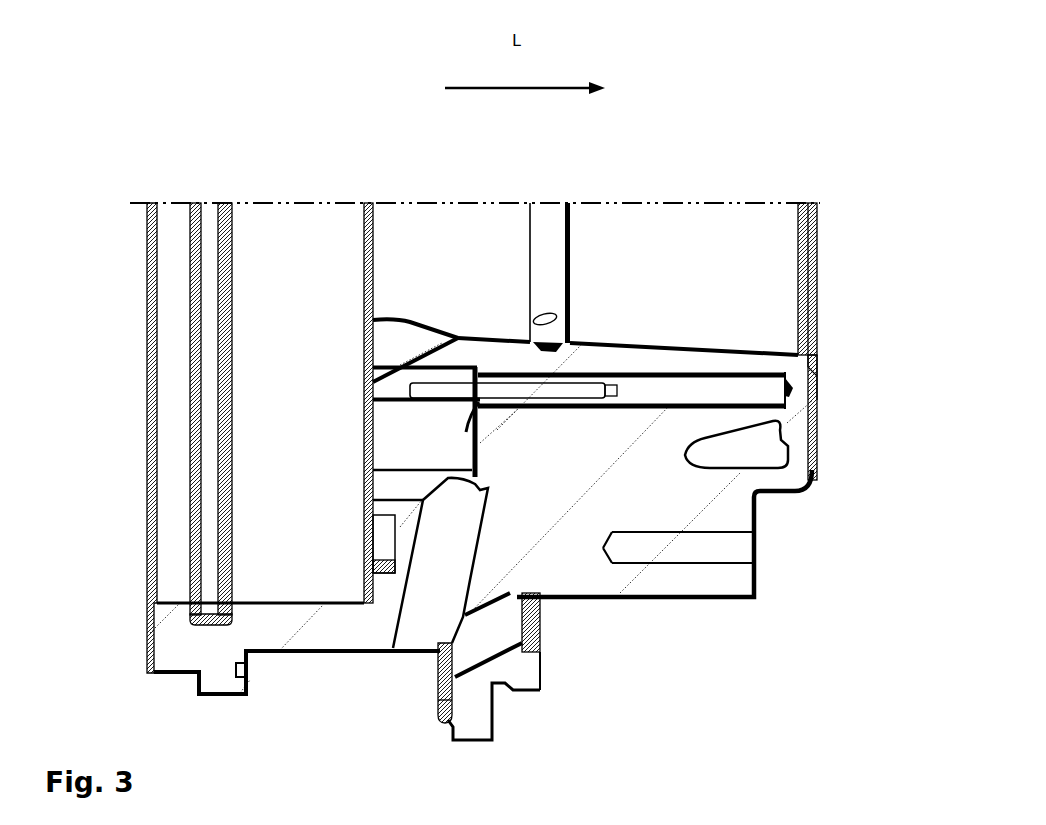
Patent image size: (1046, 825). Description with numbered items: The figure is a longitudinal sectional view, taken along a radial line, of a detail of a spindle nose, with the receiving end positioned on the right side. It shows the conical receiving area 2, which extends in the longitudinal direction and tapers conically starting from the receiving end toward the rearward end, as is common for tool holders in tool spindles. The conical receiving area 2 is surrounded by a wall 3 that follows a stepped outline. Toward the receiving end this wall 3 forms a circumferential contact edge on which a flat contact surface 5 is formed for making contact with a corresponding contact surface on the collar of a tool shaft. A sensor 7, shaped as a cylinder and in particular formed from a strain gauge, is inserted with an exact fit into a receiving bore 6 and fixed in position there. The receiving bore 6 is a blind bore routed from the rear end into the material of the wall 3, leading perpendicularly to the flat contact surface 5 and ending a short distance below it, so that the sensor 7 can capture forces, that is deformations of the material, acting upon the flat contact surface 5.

The conical receiving area 2 is at (652, 270).
The wall 3 is at (570, 565).
The flat contact surface 5 is at (817, 395).
The receiving bore 6 is at (787, 390).
The sensor 7 is at (688, 388).